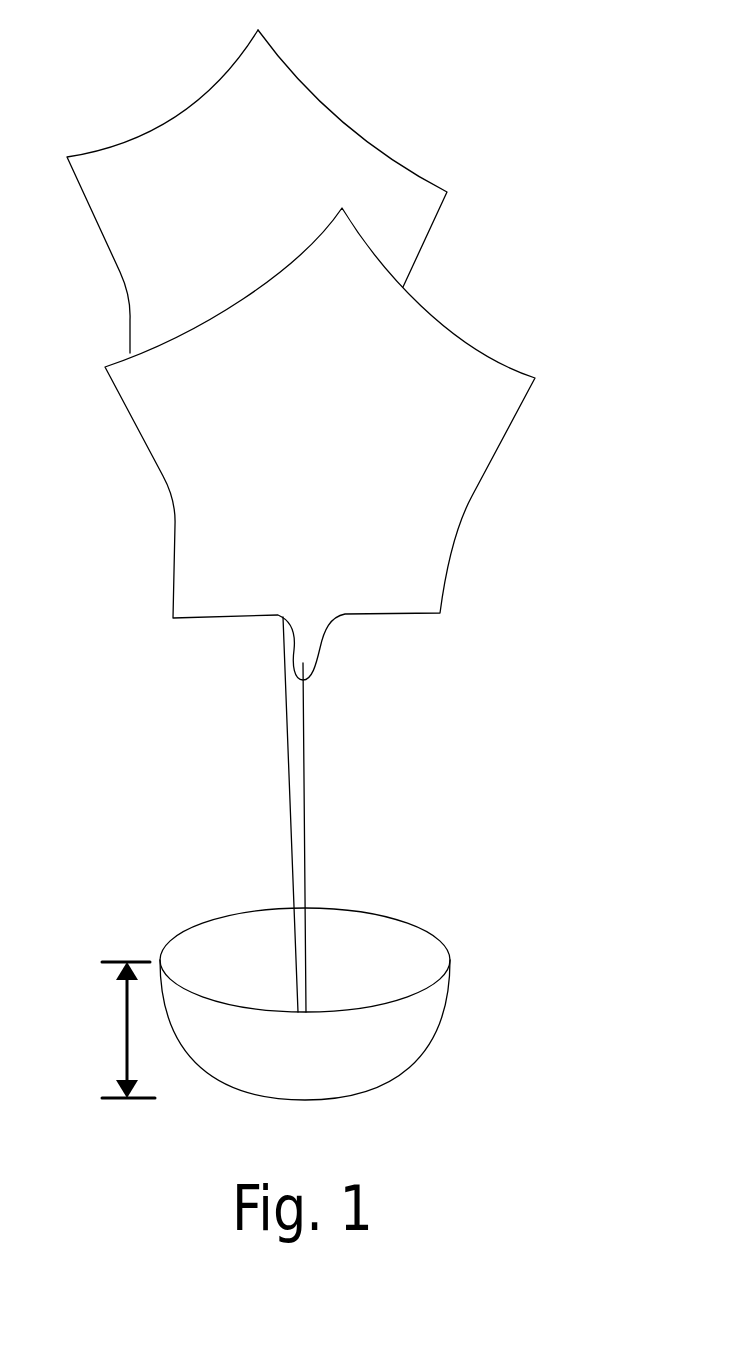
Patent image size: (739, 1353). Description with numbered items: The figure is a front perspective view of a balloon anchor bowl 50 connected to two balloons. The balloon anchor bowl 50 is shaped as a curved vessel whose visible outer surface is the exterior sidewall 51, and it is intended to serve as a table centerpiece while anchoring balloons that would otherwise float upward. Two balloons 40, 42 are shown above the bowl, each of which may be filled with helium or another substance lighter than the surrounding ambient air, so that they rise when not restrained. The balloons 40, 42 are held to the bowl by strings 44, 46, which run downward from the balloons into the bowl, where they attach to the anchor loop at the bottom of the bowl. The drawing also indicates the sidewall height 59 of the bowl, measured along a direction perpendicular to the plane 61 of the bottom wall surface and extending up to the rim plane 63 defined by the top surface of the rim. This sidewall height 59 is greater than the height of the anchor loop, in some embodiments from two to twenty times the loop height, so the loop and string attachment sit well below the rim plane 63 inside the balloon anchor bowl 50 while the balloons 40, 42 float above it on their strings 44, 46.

The balloon 40 is at (468, 485).
The balloon 42 is at (420, 203).
The string 44 is at (305, 752).
The string 46 is at (285, 728).
The balloon anchor bowl 50 is at (433, 1007).
The exterior sidewall 51 is at (387, 1043).
The sidewall height 59 is at (126, 1030).
The plane of the bottom wall surface 61 is at (120, 1098).
The rim plane 63 is at (118, 962).